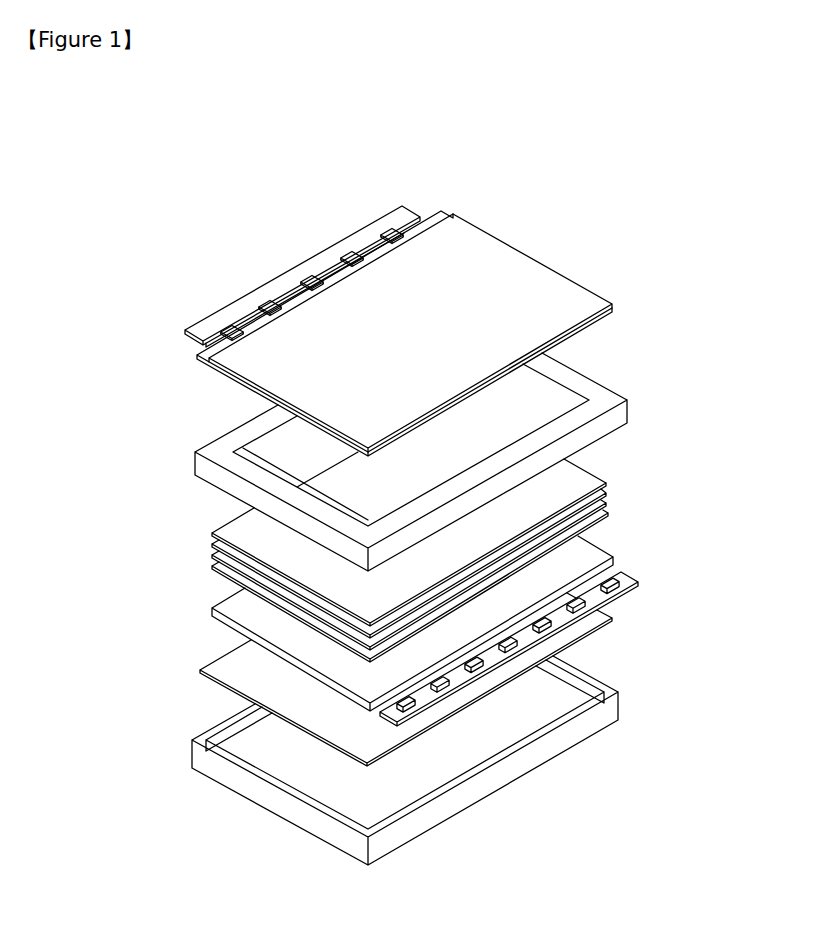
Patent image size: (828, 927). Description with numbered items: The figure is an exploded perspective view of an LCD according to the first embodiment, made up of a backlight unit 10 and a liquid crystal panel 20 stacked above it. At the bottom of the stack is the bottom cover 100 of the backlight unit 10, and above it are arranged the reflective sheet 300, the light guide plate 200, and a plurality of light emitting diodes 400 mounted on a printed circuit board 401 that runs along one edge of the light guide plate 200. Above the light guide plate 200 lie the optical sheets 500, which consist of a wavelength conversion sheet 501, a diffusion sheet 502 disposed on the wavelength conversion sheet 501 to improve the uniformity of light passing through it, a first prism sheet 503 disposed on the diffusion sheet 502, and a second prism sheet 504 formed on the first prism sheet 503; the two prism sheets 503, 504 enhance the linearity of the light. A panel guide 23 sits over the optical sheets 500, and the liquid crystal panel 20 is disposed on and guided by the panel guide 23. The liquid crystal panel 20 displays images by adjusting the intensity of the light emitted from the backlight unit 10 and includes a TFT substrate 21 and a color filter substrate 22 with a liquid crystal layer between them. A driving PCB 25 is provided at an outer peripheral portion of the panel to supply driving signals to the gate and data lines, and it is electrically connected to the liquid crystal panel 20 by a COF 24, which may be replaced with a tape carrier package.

The backlight unit 10 is at (700, 487).
The liquid crystal panel 20 is at (495, 183).
The TFT substrate 21 is at (437, 213).
The color filter substrate 22 is at (474, 228).
The panel guide 23 is at (625, 413).
The COF (chip on film) 24 is at (390, 229).
The driving PCB 25 is at (205, 322).
The bottom cover 100 is at (613, 704).
The light guide plate 200 is at (597, 553).
The reflective sheet 300 is at (598, 618).
The light emitting diodes 400 is at (623, 588).
The printed circuit board 401 is at (630, 573).
The optical sheets 500 is at (662, 465).
The wavelength conversion sheet 501 is at (608, 513).
The diffusion sheet 502 is at (607, 503).
The first prism sheet 503 is at (606, 493).
The second prism sheet 504 is at (606, 483).